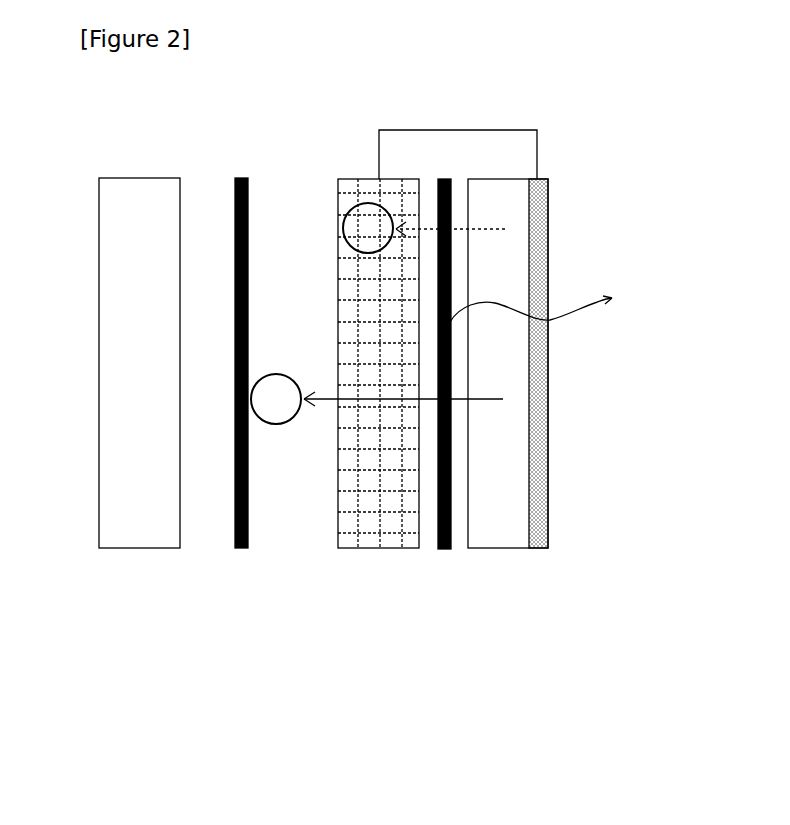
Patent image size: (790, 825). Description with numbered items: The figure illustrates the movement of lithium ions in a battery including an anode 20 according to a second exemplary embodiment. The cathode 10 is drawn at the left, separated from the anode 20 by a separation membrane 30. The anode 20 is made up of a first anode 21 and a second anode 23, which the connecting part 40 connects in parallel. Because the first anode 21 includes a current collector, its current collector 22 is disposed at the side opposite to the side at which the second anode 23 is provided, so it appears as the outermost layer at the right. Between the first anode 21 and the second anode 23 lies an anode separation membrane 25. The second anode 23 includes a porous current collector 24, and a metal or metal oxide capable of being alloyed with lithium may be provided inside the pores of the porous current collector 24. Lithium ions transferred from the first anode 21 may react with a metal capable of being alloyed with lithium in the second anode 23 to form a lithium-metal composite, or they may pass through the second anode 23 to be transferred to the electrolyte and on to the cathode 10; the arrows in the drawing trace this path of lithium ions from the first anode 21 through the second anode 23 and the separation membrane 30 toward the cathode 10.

The cathode 10 is at (155, 528).
The separation membrane 30 is at (240, 548).
The anode 20 is at (468, 449).
The second anode 23 is at (393, 525).
The first anode 21 is at (507, 525).
The current collector 22 is at (542, 528).
The porous current collector 24 is at (368, 190).
The anode separation membrane 25 is at (556, 302).
The connecting part 40 is at (450, 125).